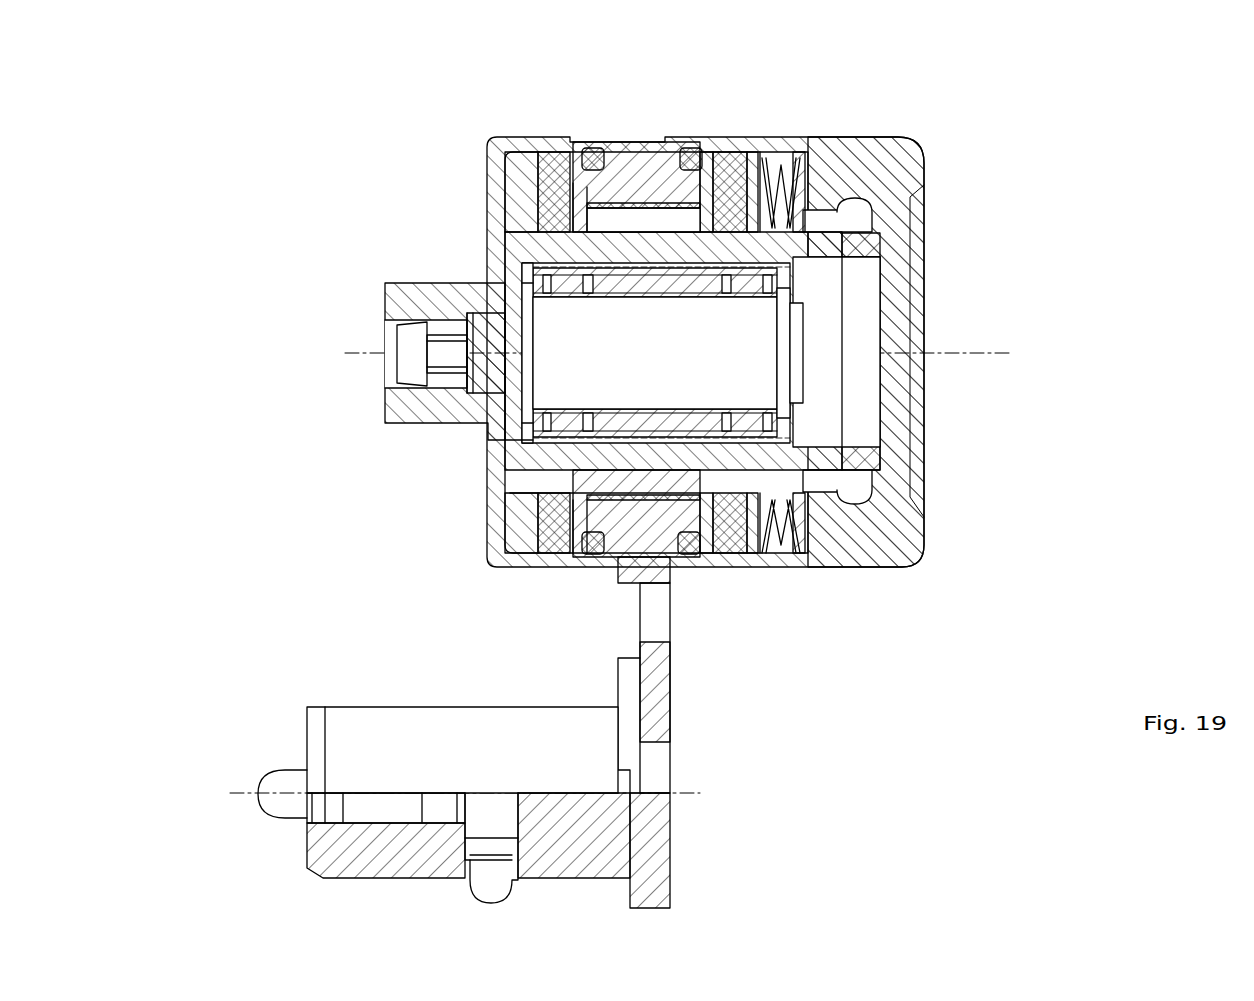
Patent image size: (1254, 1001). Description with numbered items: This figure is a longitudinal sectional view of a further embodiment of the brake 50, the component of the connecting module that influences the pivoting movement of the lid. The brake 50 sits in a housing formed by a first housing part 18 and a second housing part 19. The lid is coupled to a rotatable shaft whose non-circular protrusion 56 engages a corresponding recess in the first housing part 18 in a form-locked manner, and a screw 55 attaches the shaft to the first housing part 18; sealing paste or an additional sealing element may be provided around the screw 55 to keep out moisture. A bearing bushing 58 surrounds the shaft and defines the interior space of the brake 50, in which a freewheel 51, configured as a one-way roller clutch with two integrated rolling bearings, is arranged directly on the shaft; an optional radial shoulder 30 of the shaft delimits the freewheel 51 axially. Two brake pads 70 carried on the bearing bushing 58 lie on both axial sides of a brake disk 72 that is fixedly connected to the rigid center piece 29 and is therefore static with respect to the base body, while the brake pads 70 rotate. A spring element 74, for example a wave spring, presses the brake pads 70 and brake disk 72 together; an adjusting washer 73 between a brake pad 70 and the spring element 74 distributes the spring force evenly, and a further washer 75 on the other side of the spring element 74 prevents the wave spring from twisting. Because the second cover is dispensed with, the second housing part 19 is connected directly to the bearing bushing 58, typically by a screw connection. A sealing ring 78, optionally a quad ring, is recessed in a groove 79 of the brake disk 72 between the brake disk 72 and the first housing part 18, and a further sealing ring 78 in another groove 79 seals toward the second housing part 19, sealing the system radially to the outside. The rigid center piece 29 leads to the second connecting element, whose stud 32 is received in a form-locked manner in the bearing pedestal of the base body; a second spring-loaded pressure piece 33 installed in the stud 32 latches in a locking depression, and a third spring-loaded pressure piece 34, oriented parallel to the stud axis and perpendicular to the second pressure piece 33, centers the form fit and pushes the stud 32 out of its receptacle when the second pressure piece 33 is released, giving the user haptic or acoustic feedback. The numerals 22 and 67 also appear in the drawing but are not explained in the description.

The first housing part 18 is at (534, 148).
The second housing part 19 is at (848, 165).
The mounting boss 22 is at (398, 290).
The rigid center piece 29 is at (670, 700).
The radial shoulder 30 is at (514, 276).
The stud 32 is at (358, 722).
The second spring-loaded pressure piece 33 is at (480, 893).
The third spring-loaded pressure piece 34 is at (280, 776).
The brake 50 is at (380, 473).
The freewheel 51 is at (534, 427).
The screw 55 is at (405, 368).
The non-circular protrusion 56 is at (478, 378).
The bearing bushing 58 is at (516, 180).
The shaft 67 is at (866, 450).
The brake pad 70 is at (560, 553).
The brake disk 72 is at (648, 155).
The adjusting washer 73 is at (766, 553).
The spring element 74 is at (774, 215).
The washer 75 is at (796, 175).
The sealing ring 78 is at (592, 160).
The groove 79 is at (603, 158).